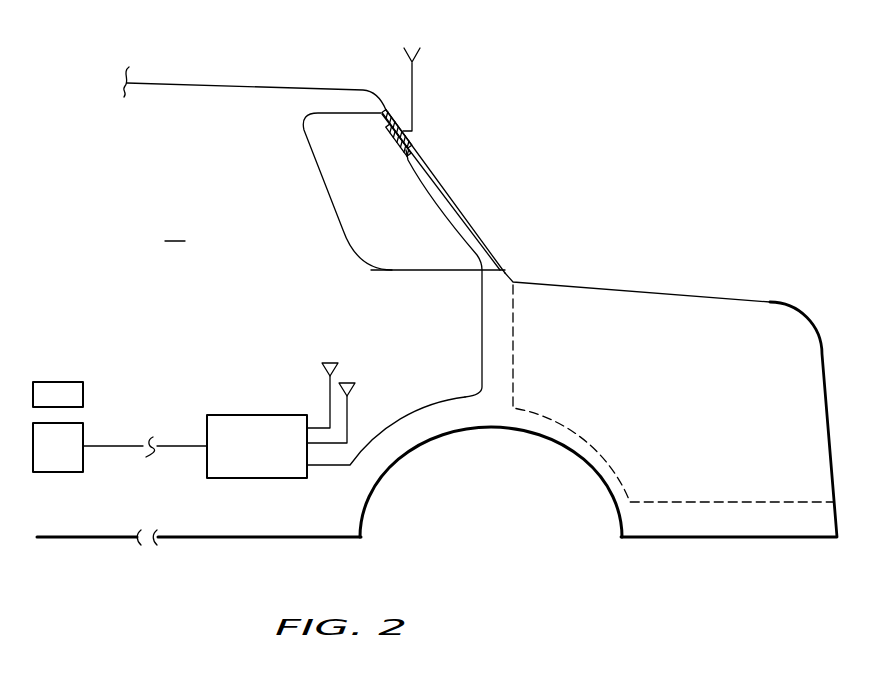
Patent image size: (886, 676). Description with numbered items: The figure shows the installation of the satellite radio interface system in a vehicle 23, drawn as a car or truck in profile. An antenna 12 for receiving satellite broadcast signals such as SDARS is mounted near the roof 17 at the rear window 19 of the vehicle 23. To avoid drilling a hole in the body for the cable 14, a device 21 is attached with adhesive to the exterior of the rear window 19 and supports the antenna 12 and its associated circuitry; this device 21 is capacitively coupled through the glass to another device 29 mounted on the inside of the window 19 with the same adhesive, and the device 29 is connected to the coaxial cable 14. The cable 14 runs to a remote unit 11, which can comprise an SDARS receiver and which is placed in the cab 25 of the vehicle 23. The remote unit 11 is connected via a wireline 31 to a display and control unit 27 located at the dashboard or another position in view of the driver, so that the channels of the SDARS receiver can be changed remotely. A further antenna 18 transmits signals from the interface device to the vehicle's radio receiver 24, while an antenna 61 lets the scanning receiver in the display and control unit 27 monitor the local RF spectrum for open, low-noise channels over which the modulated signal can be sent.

The remote unit 11 is at (248, 457).
The antenna 12 is at (415, 73).
The coaxial cable 14 is at (433, 204).
The roof 17 is at (183, 83).
The antenna 18 is at (350, 382).
The rear window 19 is at (352, 196).
The device 21 is at (392, 124).
The vehicle 23 is at (458, 192).
The radio receiver 24 is at (56, 382).
The cab 25 is at (175, 228).
The display and control unit 27 is at (70, 468).
The device 29 is at (388, 138).
The wireline 31 is at (175, 448).
The antenna 61 is at (321, 371).